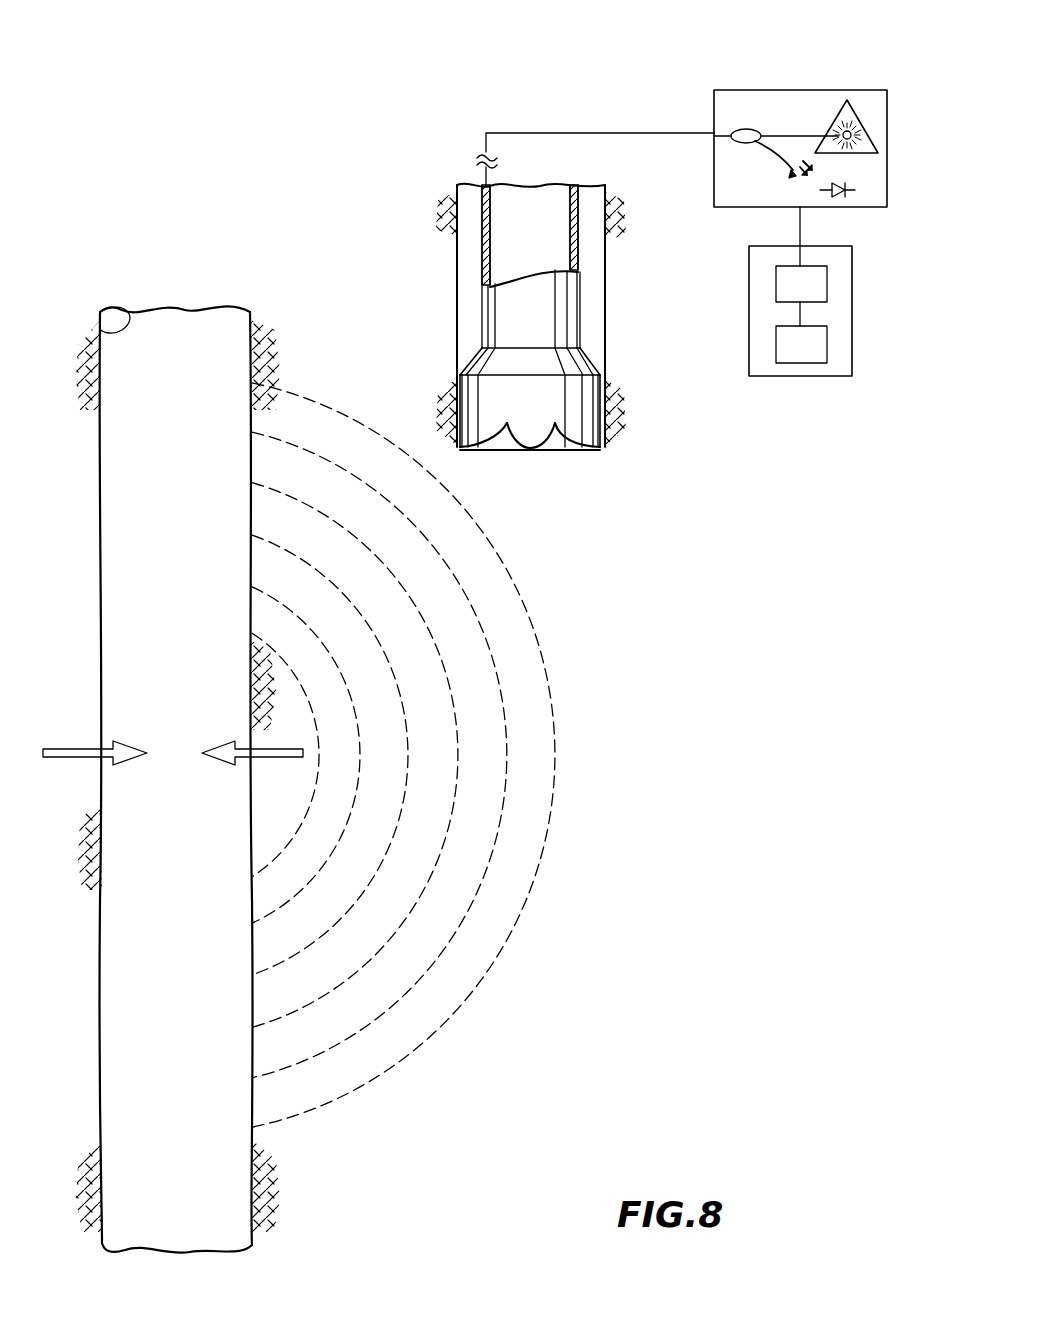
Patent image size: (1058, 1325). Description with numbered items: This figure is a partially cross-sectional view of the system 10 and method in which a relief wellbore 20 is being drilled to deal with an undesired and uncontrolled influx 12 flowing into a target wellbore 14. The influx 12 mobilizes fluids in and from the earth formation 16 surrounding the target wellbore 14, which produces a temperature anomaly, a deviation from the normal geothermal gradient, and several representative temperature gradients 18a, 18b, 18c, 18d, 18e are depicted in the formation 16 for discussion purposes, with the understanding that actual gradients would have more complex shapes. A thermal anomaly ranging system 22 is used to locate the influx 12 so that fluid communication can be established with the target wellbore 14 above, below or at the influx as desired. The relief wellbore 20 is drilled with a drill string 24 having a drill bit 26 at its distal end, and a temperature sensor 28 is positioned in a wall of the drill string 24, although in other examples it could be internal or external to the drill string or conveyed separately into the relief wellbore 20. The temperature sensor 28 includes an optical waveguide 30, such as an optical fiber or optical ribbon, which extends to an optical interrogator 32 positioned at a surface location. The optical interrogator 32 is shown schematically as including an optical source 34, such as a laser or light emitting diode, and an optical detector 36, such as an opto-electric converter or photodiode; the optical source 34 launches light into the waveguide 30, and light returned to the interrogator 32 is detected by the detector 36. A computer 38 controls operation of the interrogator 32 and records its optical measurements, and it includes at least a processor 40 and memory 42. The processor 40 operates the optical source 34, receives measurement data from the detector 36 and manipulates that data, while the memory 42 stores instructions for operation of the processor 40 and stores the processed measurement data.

The system 10 is at (246, 296).
The influx 12 is at (92, 748).
The target wellbore 14 is at (122, 308).
The earth formation 16 is at (552, 618).
The temperature gradient 18a is at (274, 862).
The temperature gradient 18b is at (266, 912).
The temperature gradient 18c is at (280, 960).
The temperature gradient 18d is at (276, 1014).
The temperature gradient 18e is at (276, 1064).
The relief wellbore 20 is at (458, 322).
The thermal anomaly ranging system 22 is at (789, 106).
The drill string 24 is at (484, 252).
The drill bit 26 is at (520, 452).
The temperature sensor 28 is at (485, 232).
The optical waveguide 30 is at (526, 133).
The optical interrogator 32 is at (818, 86).
The optical source 34 is at (858, 115).
The optical detector 36 is at (848, 188).
The computer 38 is at (844, 291).
The processor 40 is at (827, 283).
The memory 42 is at (827, 340).